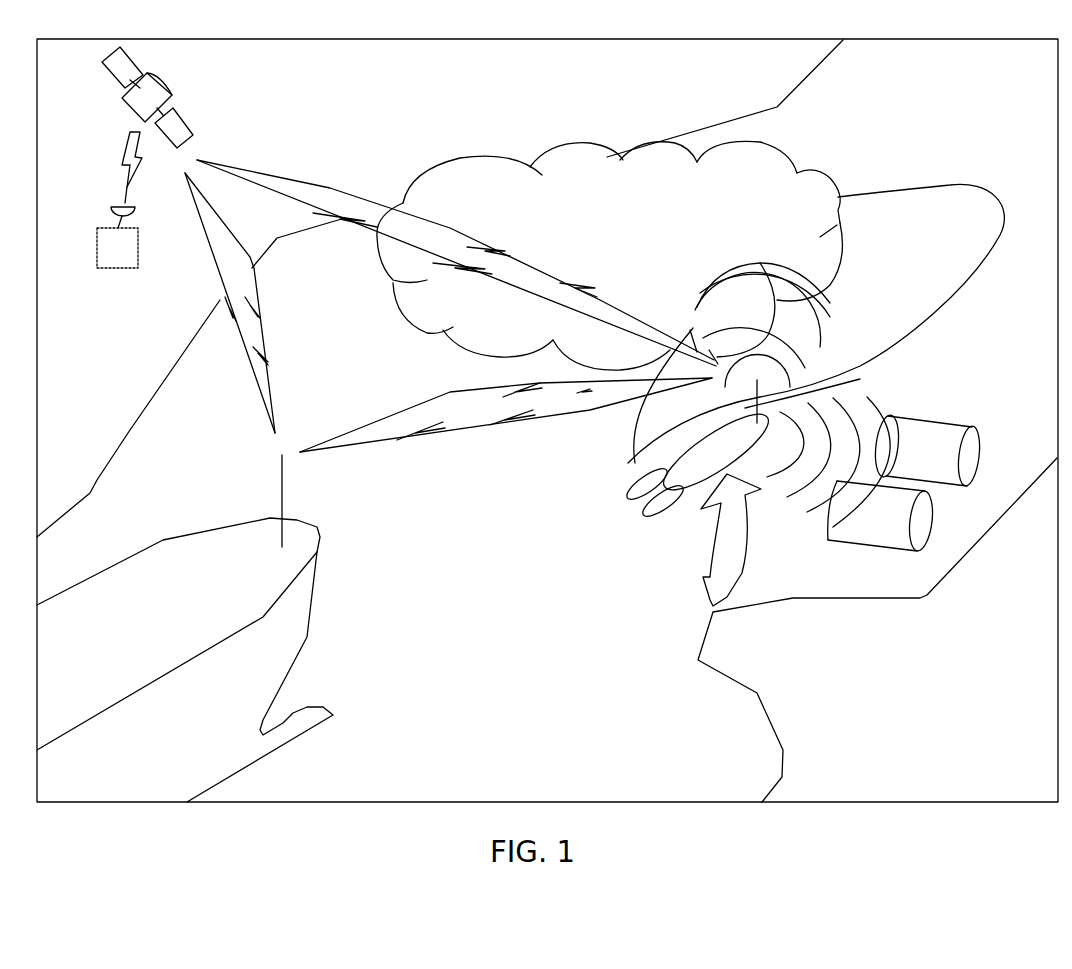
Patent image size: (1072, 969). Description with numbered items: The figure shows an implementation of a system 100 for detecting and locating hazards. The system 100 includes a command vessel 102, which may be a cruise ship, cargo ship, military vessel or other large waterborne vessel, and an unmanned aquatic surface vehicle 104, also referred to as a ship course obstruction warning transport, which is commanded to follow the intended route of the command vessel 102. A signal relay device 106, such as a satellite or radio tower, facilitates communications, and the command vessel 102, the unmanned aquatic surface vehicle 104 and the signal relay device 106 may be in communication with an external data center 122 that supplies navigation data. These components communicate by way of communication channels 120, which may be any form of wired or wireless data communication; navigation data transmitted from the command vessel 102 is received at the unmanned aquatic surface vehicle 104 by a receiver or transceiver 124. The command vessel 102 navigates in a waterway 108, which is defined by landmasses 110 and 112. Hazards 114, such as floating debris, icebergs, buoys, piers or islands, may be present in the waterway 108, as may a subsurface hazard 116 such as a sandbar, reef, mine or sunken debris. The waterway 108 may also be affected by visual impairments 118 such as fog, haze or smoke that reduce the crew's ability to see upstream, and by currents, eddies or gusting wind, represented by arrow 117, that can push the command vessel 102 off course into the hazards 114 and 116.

The system 100 is at (941, 96).
The command vessel 102 is at (163, 632).
The unmanned aquatic surface vehicle 104 is at (729, 465).
The signal relay device 106 is at (140, 108).
The waterway 108 is at (612, 633).
The landmass 110 is at (398, 121).
The landmass 112 is at (933, 718).
The hazards 114 is at (925, 515).
The subsurface hazard 116 is at (917, 310).
The arrow 117 is at (720, 563).
The visual impairments 118 is at (656, 241).
The communication channels 120 is at (417, 418).
The external data center 122 is at (133, 262).
The receiver or transceiver 124 is at (845, 382).